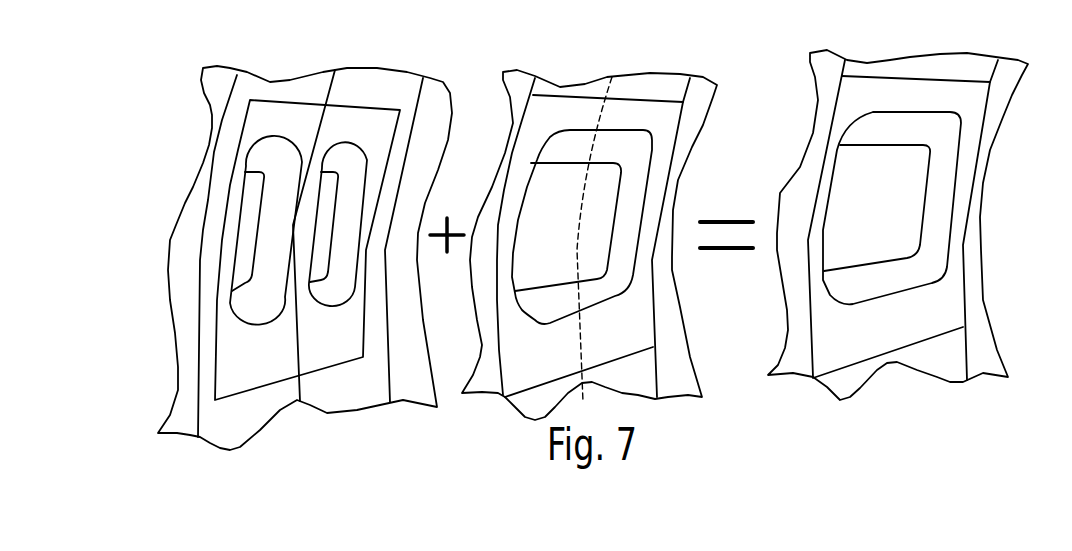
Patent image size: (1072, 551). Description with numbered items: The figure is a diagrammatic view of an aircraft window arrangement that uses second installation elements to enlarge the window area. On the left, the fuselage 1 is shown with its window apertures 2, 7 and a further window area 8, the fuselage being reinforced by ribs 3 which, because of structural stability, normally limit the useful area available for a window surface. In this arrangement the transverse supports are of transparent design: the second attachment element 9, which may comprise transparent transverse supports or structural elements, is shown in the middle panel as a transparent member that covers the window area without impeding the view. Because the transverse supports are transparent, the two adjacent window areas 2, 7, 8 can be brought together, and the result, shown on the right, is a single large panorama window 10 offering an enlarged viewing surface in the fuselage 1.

The fuselage 1 is at (305, 225).
The window aperture 2 is at (264, 250).
The rib 3 is at (343, 218).
The window aperture 7 is at (264, 250).
The window area 8 is at (335, 224).
The second attachment element 9 is at (598, 226).
The panorama window 10 is at (901, 156).